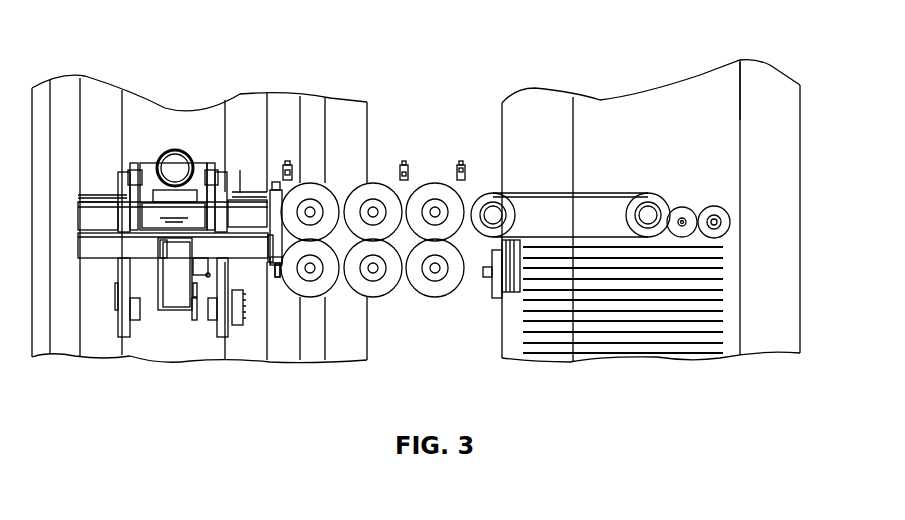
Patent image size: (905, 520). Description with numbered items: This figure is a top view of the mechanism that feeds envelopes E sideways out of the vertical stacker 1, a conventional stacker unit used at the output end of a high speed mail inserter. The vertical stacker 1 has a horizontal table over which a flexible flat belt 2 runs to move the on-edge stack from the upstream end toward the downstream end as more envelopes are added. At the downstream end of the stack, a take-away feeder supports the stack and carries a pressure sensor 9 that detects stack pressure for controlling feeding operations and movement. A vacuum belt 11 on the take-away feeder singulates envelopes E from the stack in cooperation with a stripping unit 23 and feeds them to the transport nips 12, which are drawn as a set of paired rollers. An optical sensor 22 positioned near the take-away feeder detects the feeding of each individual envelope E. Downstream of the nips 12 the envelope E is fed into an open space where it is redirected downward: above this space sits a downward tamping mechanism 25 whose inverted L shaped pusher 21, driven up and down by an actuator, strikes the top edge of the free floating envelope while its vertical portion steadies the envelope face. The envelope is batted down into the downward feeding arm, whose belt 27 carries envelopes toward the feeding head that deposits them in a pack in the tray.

The vertical stacker 1 is at (767, 75).
The flexible flat belt 2 is at (715, 85).
The pressure sensor 9 is at (720, 207).
The vacuum belt 11 is at (627, 193).
The transport nips 12 is at (328, 287).
The pusher 21 is at (107, 247).
The optical sensor 22 is at (455, 168).
The stripping unit 23 is at (490, 291).
The downward tamping mechanism 25 is at (184, 139).
The belt 27 is at (132, 273).
The envelope E is at (693, 240).